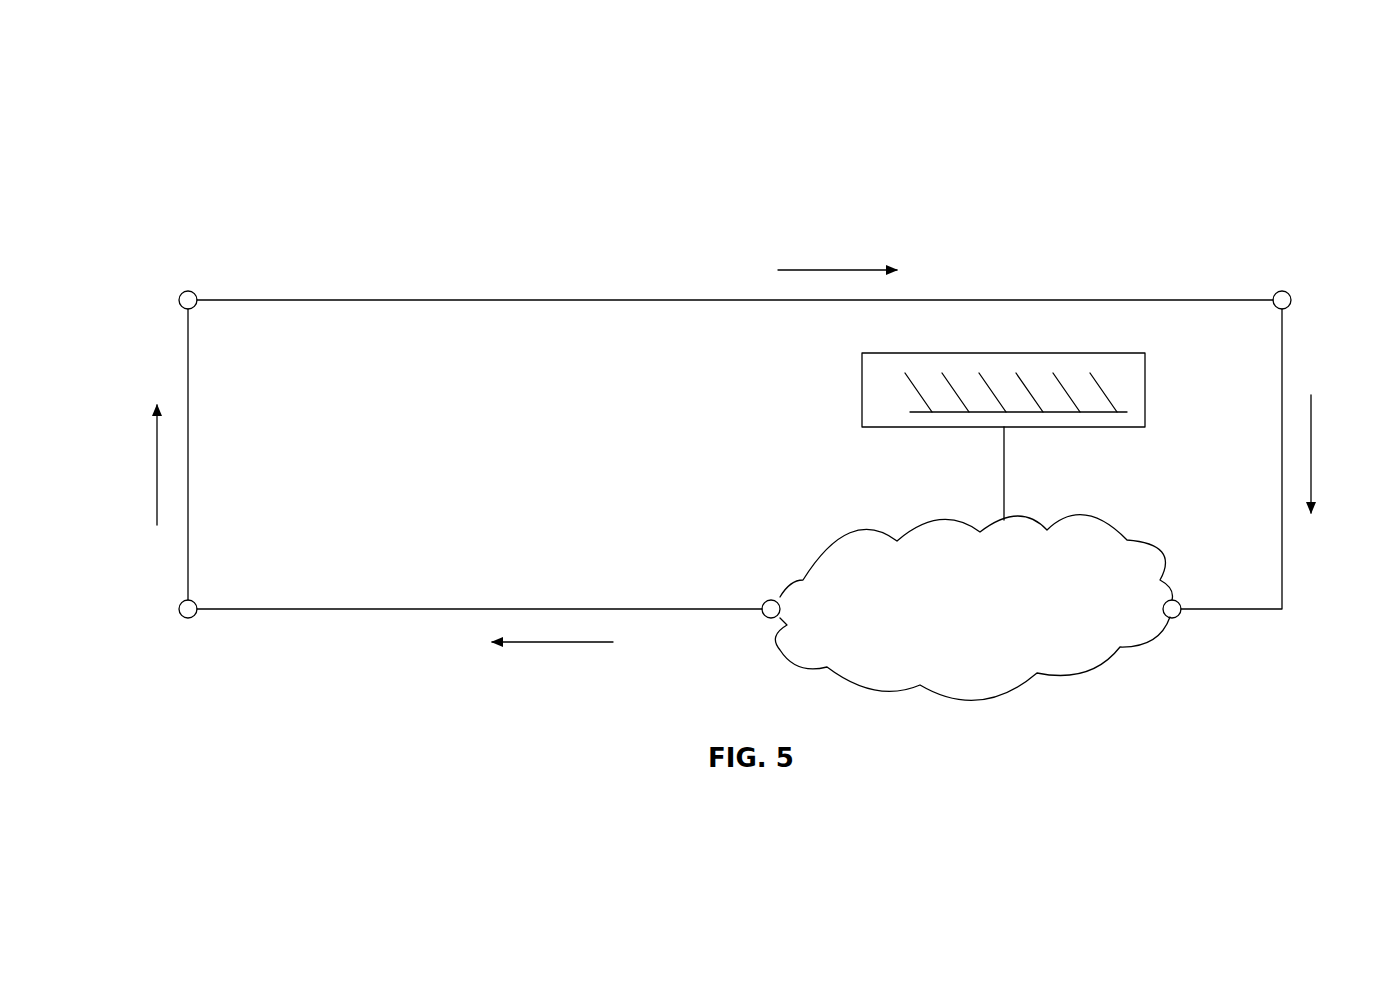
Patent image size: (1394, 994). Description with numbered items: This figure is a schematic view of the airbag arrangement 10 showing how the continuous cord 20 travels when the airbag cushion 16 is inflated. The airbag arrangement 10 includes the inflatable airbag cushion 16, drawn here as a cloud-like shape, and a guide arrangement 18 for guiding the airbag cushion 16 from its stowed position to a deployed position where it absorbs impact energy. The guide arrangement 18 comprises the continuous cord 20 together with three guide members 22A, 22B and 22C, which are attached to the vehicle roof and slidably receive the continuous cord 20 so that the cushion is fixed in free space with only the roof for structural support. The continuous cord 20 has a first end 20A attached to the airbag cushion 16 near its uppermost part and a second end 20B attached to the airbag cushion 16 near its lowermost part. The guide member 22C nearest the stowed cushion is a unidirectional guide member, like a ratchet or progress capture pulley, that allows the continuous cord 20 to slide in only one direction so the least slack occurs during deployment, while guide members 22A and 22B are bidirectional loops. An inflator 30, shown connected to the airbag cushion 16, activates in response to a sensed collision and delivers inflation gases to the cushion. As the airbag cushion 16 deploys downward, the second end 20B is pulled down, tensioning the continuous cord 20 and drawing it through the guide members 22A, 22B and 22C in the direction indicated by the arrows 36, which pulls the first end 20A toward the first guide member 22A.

The airbag arrangement 10 is at (200, 140).
The airbag cushion 16 is at (983, 702).
The guide arrangement 18 is at (243, 621).
The continuous cord 20 is at (405, 298).
The first end 20A is at (764, 614).
The second end 20B is at (1180, 617).
The first guide member 22A is at (188, 618).
The second guide member 22B is at (184, 292).
The third guide member 22C is at (1291, 303).
The inflator 30 is at (862, 392).
The arrows 36 is at (831, 270).